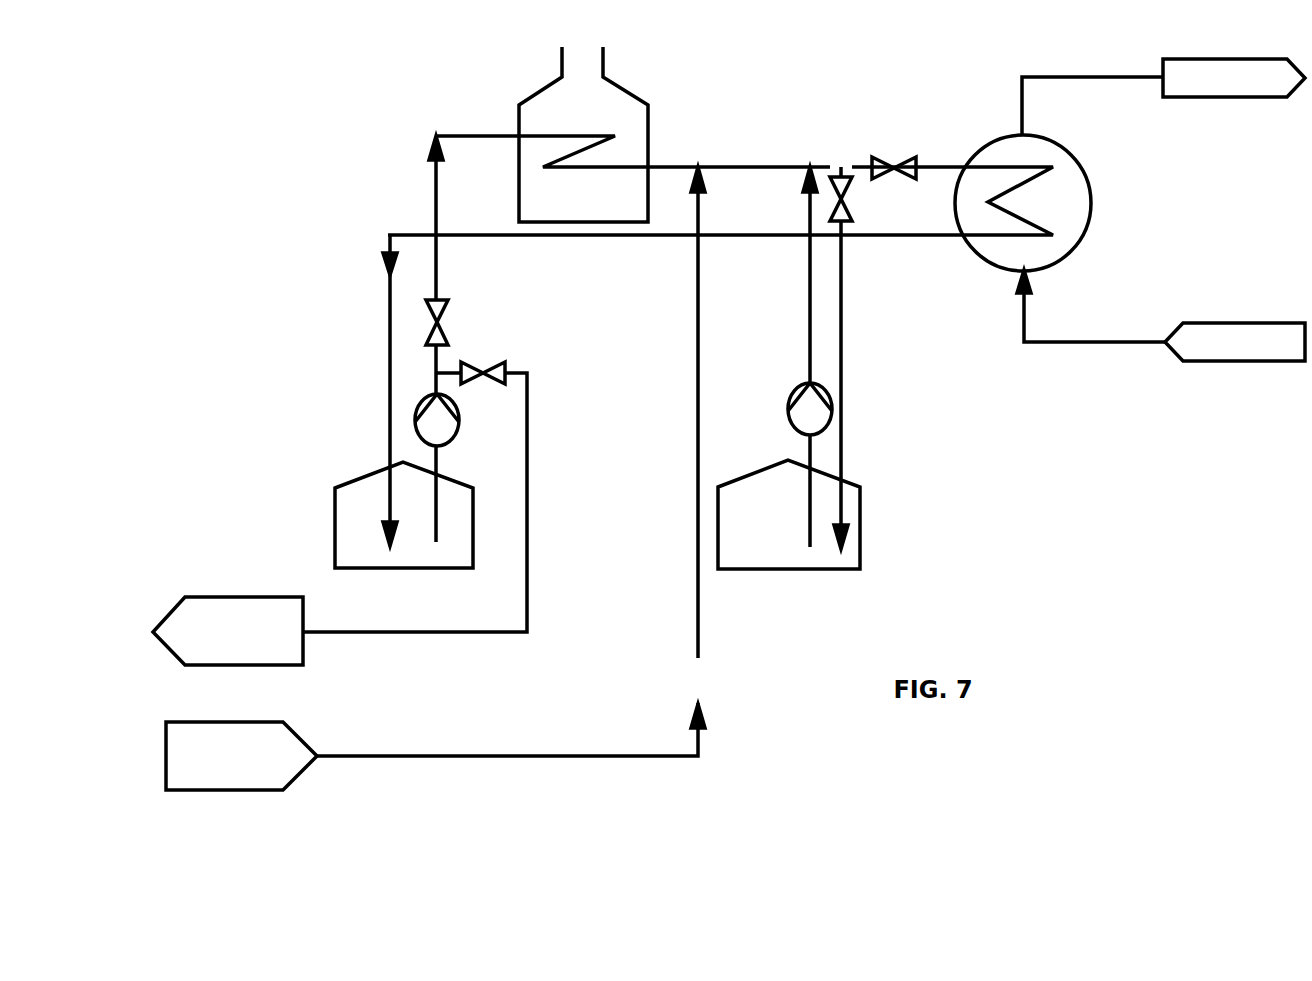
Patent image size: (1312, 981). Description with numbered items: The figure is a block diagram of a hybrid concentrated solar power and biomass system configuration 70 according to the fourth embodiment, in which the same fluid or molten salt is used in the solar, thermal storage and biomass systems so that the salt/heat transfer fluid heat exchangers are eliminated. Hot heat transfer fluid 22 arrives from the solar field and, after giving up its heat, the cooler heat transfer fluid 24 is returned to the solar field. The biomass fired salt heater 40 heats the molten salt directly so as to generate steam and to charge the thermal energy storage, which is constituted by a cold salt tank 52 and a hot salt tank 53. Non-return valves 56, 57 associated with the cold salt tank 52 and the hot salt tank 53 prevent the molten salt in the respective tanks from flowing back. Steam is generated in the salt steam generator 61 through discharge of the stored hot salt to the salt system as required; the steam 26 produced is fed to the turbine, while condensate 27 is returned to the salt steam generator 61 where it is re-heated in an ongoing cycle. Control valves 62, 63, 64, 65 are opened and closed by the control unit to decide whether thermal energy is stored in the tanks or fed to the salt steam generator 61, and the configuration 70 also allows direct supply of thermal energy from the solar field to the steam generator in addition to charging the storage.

The heat transfer fluid 22 is at (230, 792).
The cooler heat transfer fluid 24 is at (212, 596).
The steam 26 is at (1247, 98).
The condensate 27 is at (1247, 362).
The biomass fired salt heater 40 is at (650, 112).
The cold salt tank 52 is at (333, 527).
The hot salt tank 53 is at (862, 525).
The non-return valve 56 is at (458, 428).
The non-return valve 57 is at (788, 405).
The salt steam generator 61 is at (1077, 245).
The control valve 62 is at (446, 312).
The control valve 63 is at (497, 362).
The control valve 64 is at (850, 190).
The control valve 65 is at (882, 157).
The solar thermal power system 70 is at (988, 572).